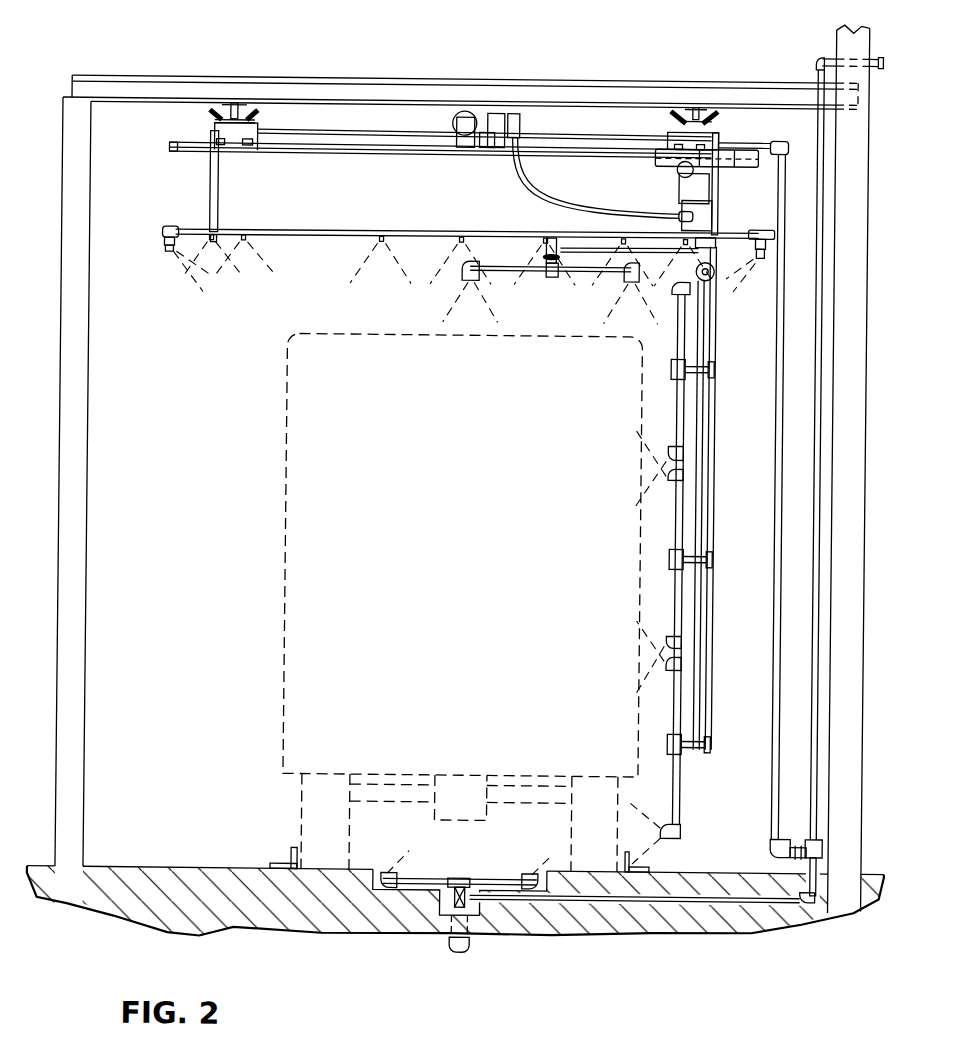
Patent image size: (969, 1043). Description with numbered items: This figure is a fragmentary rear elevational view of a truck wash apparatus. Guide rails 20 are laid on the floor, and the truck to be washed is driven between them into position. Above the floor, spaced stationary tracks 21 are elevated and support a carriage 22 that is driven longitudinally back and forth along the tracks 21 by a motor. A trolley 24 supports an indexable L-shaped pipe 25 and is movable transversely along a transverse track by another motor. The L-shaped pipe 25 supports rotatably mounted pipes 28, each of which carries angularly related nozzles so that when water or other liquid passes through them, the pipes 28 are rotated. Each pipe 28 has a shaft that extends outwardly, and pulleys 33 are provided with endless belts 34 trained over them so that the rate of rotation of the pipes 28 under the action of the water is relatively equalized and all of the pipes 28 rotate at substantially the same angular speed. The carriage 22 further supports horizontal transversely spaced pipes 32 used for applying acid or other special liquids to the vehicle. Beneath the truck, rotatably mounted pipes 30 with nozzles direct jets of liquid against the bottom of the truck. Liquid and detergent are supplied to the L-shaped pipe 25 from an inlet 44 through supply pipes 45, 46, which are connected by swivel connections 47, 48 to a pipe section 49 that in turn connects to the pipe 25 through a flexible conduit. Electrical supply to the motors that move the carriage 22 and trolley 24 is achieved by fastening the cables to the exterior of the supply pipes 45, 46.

The guide rails 20 is at (301, 848).
The stationary tracks 21 is at (213, 116).
The carriage 22 is at (416, 173).
The trolley 24 is at (724, 124).
The indexable L-shaped pipe 25 is at (709, 438).
The rotatably mounted pipes 28 is at (584, 267).
The rotatably mounted pipes 30 is at (431, 876).
The horizontal transversely spaced pipes 32 is at (286, 228).
The pulleys 33 is at (720, 361).
The endless belts 34 is at (717, 495).
The inlet 44 is at (872, 50).
The supply pipe 45 is at (824, 449).
The supply pipe 46 is at (781, 450).
The swivel connection 47 is at (805, 832).
The swivel connection 48 is at (784, 139).
The pipe section 49 is at (767, 142).